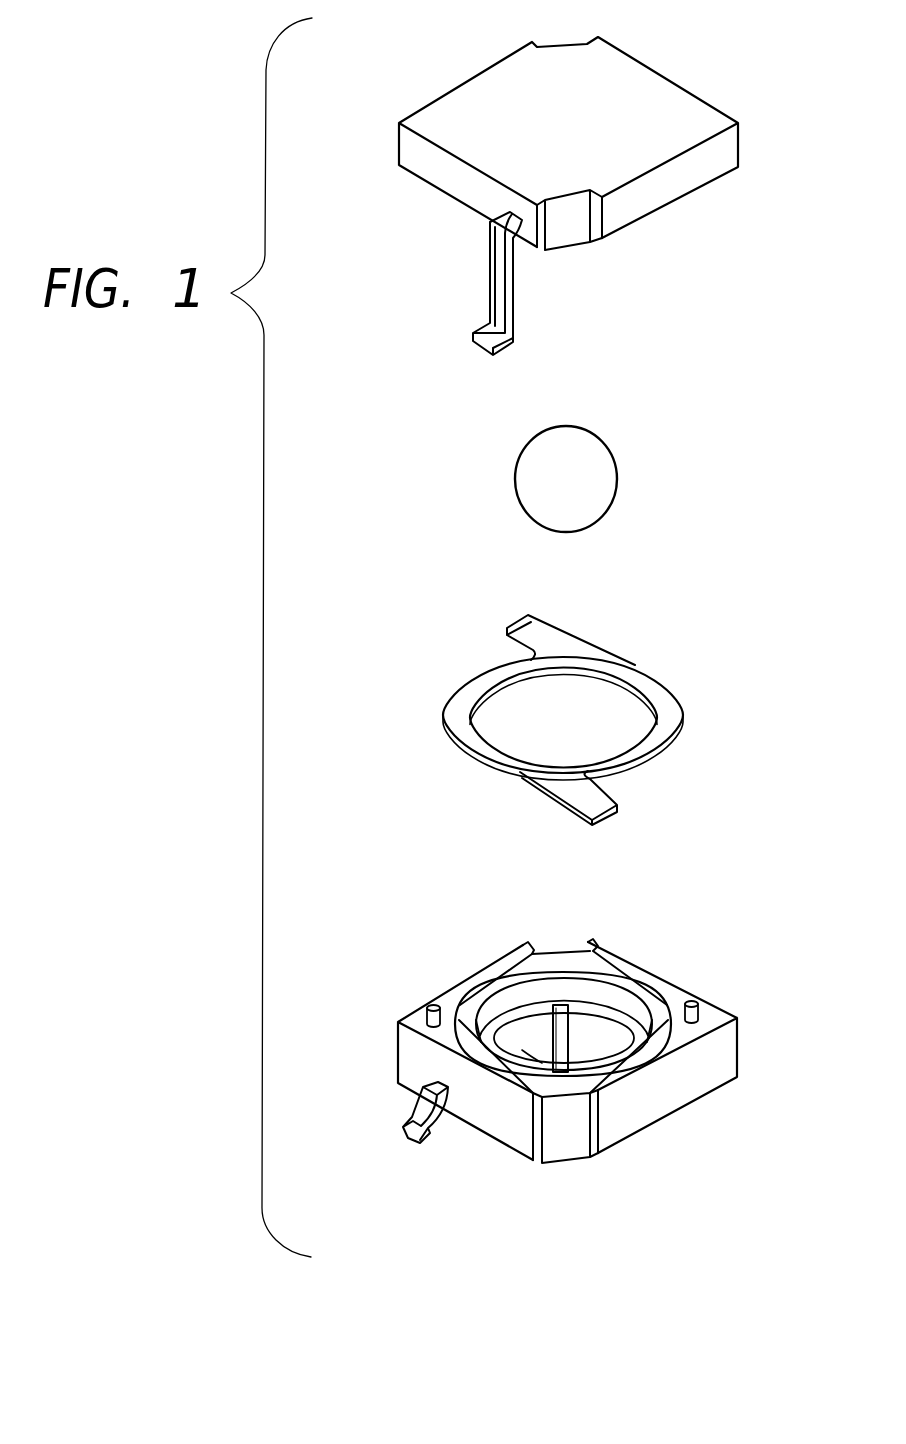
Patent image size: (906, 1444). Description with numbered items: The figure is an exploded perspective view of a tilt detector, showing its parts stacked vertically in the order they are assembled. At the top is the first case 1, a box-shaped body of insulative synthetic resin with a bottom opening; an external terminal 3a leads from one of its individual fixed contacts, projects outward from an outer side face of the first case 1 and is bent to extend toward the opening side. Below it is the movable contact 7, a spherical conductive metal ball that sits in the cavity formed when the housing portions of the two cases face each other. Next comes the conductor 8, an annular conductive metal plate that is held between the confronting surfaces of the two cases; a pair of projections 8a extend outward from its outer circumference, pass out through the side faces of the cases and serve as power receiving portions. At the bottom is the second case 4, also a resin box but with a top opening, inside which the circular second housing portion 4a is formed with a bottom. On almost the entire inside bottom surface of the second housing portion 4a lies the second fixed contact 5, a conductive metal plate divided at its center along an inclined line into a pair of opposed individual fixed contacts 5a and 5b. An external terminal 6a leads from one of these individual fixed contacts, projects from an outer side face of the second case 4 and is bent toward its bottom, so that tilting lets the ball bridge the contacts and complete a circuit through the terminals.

The first case 1 is at (663, 70).
The external terminal 3a is at (480, 328).
The movable contact 7 is at (620, 463).
The conductor 8 is at (620, 658).
The projections 8a is at (532, 632).
The second case 4 is at (702, 990).
The second housing portion 4a is at (523, 993).
The second fixed contact 5 is at (725, 1173).
The individual fixed contact 5a is at (542, 1063).
The individual fixed contact 5b is at (582, 1047).
The external terminal 6a is at (410, 1142).